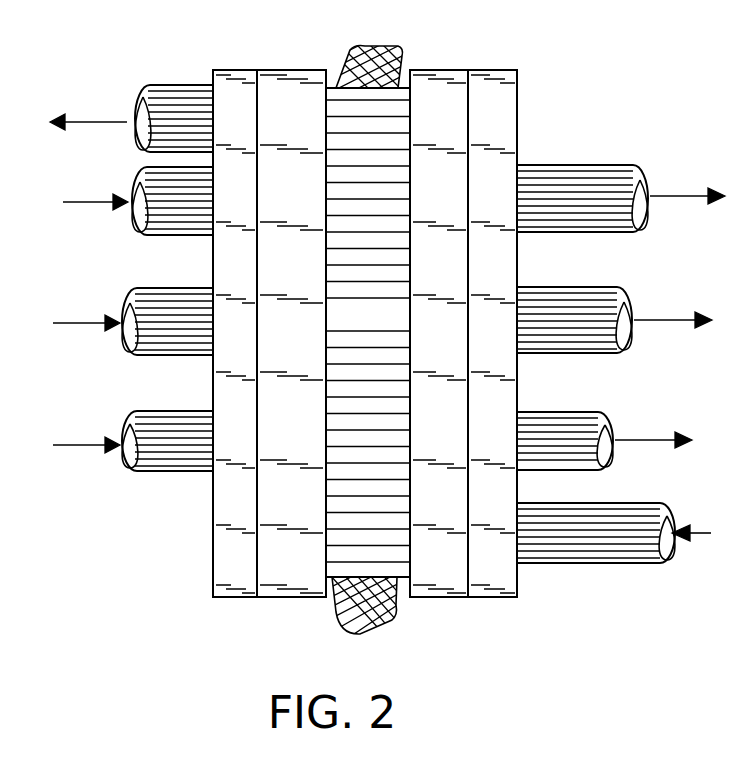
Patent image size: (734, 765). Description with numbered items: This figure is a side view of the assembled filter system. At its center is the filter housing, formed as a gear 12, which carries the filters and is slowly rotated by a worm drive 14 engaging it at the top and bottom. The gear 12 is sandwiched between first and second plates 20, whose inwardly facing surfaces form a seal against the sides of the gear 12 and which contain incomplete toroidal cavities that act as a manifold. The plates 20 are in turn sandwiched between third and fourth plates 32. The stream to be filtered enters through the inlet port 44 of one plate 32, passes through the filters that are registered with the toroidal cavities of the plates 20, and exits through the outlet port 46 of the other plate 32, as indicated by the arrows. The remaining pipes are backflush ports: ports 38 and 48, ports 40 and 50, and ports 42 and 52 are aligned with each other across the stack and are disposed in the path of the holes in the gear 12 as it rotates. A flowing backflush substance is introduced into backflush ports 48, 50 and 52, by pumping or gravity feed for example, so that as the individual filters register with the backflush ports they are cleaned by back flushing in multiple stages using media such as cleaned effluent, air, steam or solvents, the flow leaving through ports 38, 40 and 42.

The gear 12 is at (368, 332).
The worm drive 14 is at (390, 45).
The first and second plates 20 is at (288, 590).
The third and fourth plates 32 is at (225, 590).
The backflush port 38 is at (560, 185).
The backflush port 40 is at (555, 310).
The backflush port 42 is at (547, 432).
The inlet port 44 is at (542, 523).
The outlet port 46 is at (166, 103).
The backflush port 48 is at (165, 222).
The backflush port 50 is at (167, 342).
The backflush port 52 is at (165, 465).